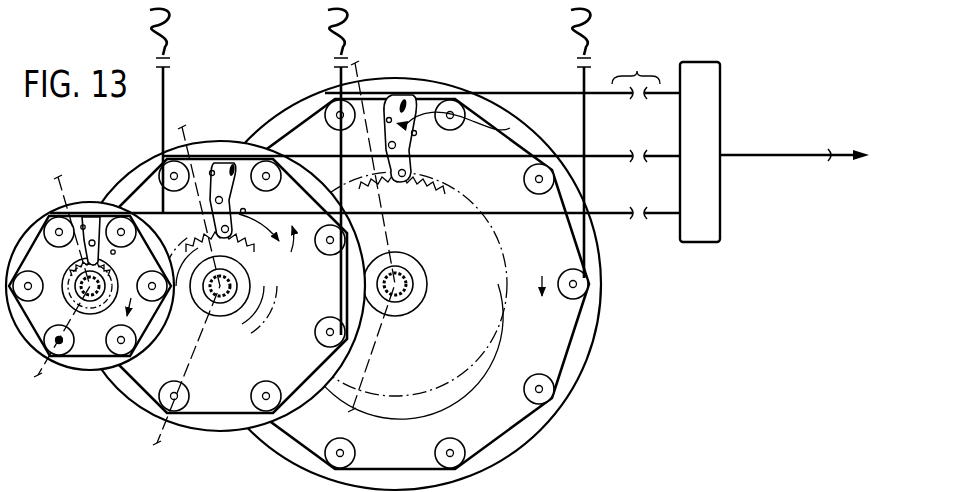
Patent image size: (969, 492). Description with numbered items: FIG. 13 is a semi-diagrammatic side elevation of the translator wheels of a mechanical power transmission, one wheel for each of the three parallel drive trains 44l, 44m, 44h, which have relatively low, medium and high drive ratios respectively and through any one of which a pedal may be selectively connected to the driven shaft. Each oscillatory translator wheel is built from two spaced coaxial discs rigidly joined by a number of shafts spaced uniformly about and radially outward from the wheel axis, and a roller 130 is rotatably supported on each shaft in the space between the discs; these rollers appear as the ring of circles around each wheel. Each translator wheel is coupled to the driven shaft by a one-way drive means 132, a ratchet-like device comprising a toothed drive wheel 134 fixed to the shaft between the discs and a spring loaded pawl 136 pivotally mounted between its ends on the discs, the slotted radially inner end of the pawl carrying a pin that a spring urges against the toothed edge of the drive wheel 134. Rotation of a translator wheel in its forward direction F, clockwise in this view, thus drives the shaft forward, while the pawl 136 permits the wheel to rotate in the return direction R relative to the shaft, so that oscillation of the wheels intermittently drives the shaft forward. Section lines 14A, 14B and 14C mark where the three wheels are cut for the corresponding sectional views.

The high drive ratio drive train 44h is at (443, 72).
The medium drive ratio drive train 44m is at (197, 122).
The low drive ratio drive train 44l is at (27, 183).
The section line 14A- 14A is at (356, 68).
The section line 14B- 14B is at (183, 131).
The section line 14C- 14C is at (59, 180).
The roller 130 is at (462, 448).
The one-way drive means 132 is at (413, 106).
The toothed drive wheel 134 is at (484, 314).
The spring loaded pawl 136 is at (405, 128).